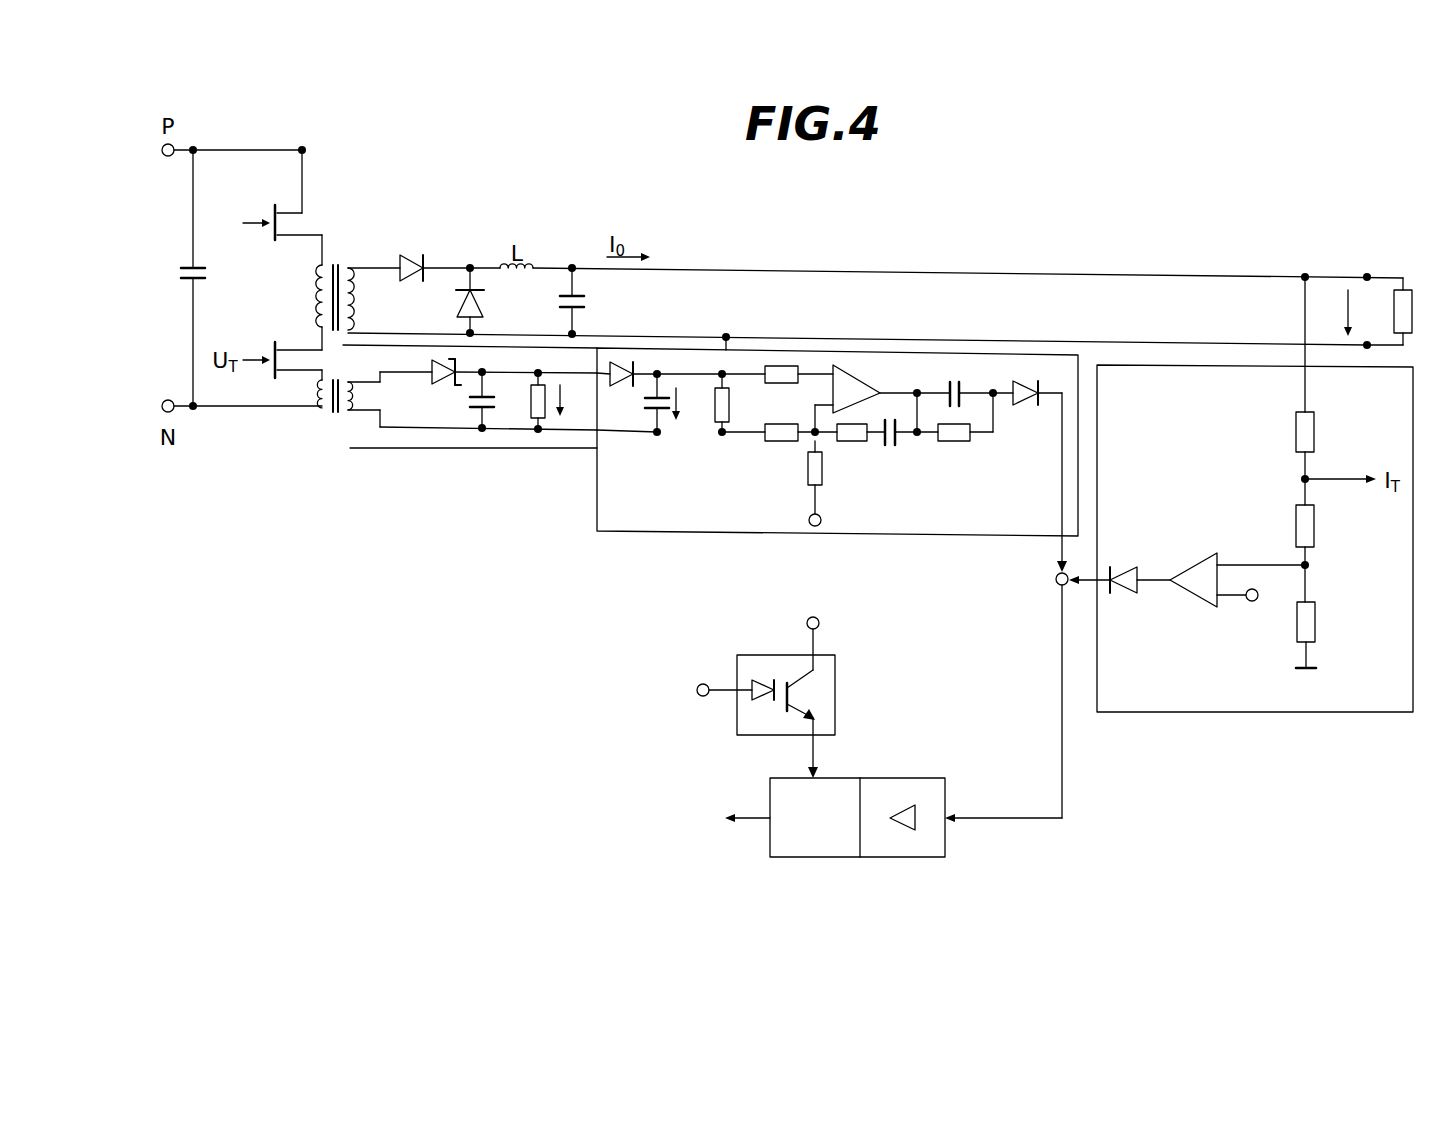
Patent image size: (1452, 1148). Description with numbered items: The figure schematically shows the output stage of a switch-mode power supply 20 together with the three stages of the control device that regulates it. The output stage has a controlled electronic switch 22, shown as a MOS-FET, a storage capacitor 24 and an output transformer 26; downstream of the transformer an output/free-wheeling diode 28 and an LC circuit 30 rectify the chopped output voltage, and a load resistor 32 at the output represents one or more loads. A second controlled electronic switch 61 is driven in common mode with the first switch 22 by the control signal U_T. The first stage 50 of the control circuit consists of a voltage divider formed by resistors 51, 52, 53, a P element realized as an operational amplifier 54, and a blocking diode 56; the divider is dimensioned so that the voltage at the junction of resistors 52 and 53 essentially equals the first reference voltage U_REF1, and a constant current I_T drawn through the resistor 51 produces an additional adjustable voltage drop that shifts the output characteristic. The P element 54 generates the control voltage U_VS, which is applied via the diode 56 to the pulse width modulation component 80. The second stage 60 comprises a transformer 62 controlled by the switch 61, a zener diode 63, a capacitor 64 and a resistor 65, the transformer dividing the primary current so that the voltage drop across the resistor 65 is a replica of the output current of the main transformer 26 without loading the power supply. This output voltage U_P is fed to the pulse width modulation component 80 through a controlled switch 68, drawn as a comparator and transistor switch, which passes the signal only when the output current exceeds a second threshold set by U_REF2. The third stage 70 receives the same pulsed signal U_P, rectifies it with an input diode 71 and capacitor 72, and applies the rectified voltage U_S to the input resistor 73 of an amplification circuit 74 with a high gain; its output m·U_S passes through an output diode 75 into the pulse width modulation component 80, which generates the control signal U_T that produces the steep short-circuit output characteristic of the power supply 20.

The switch-mode power supply 20 is at (324, 140).
The controlled electronic switch 22 is at (298, 223).
The storage capacitor 24 is at (188, 262).
The output transformer 26 is at (352, 255).
The output/free-wheeling diode 28 is at (417, 253).
The LC circuit 30 is at (570, 260).
The load resistor 32 is at (1408, 290).
The first stage 50 is at (1372, 701).
The resistor 51 is at (1316, 438).
The resistor 52 is at (1316, 528).
The resistor 53 is at (1318, 626).
The operational amplifier 54 is at (1200, 553).
The blocking diode 56 is at (1122, 597).
The second stage 60 is at (417, 433).
The second controlled electronic switch 61 is at (307, 363).
The transformer 62 is at (337, 415).
The zener diode 63 is at (452, 384).
The capacitor 64 is at (487, 410).
The resistor 65 is at (543, 420).
The controlled switch 68 is at (835, 695).
The third stage 70 is at (964, 520).
The input diode 71 is at (638, 386).
The capacitor 72 is at (672, 410).
The input resistor 73 is at (717, 422).
The amplification circuit 74 is at (849, 450).
The output diode 75 is at (1030, 410).
The pulse width modulation component 80 is at (890, 857).